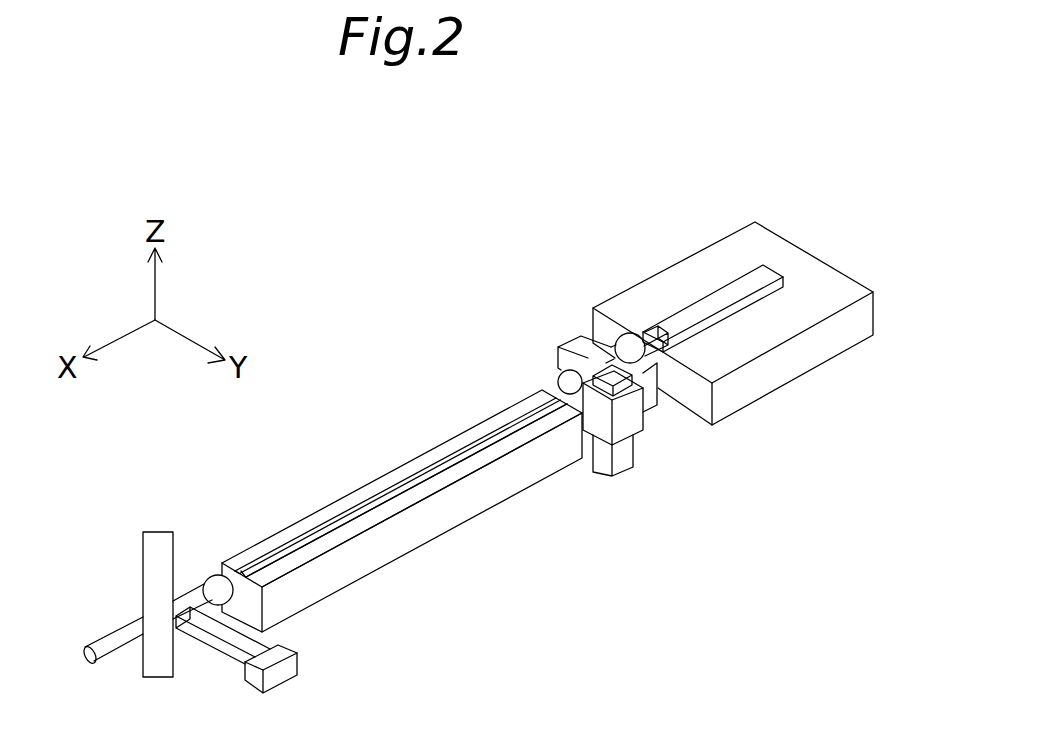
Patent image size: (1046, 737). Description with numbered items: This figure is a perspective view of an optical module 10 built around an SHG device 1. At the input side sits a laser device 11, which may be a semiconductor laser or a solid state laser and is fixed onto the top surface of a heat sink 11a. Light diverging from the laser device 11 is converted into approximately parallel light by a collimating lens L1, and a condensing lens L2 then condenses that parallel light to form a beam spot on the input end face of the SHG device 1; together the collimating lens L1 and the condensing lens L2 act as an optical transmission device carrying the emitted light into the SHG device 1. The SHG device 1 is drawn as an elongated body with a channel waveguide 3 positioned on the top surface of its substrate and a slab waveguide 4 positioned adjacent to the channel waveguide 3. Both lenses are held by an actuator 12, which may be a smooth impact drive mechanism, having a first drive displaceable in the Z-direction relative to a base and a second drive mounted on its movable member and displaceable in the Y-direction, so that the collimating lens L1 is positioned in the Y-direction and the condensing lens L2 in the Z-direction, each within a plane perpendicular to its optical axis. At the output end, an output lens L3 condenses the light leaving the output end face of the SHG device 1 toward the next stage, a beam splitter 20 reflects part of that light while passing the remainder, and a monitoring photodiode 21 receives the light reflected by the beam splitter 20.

The optical module 10 is at (379, 229).
The SHG device 1 is at (382, 480).
The channel waveguide 3 is at (452, 452).
The slab waveguide 4 is at (487, 453).
The laser device 11 is at (710, 300).
The heat sink 11a is at (829, 281).
The actuator 12 is at (652, 454).
The beam splitter 20 is at (155, 550).
The monitoring photodiode 21 is at (278, 660).
The collimating lens L1 is at (628, 343).
The condensing lens L2 is at (560, 375).
The output lens L3 is at (212, 577).